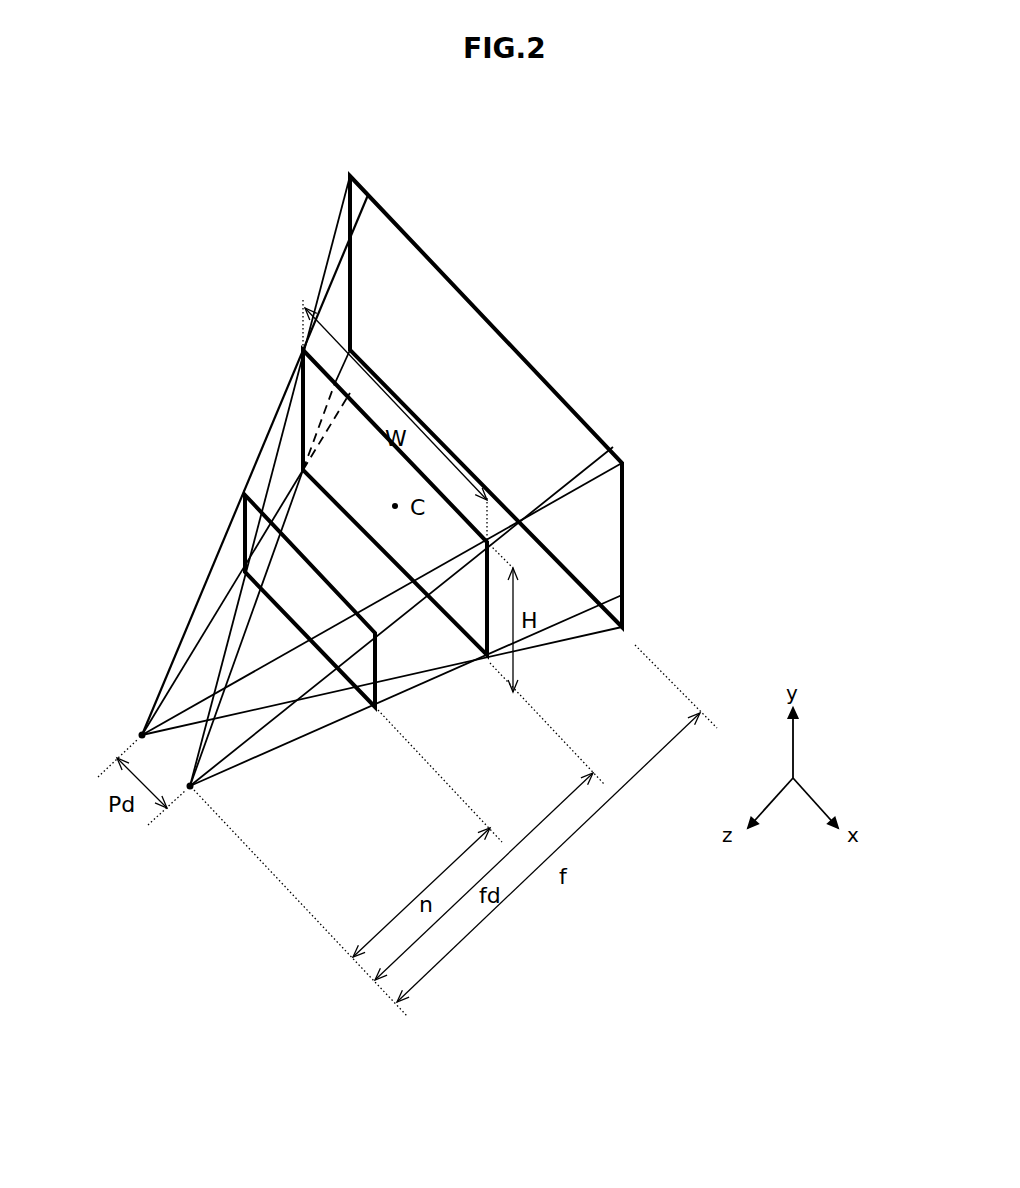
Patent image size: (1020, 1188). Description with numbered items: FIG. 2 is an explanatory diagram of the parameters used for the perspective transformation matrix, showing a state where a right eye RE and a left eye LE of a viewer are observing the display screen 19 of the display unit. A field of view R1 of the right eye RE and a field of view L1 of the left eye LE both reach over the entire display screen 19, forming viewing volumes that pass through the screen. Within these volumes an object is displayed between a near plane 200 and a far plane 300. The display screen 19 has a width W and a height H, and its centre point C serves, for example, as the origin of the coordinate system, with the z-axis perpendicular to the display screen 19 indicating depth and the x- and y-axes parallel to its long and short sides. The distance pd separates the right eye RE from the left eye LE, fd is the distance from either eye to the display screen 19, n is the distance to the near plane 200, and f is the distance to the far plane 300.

The far plane 300 is at (530, 360).
The display screen 19 is at (300, 423).
The near plane 200 is at (242, 537).
The left eye LE is at (140, 735).
The right eye RE is at (194, 790).
The field of view of the left eye L1 is at (187, 623).
The field of view of the right eye R1 is at (275, 722).